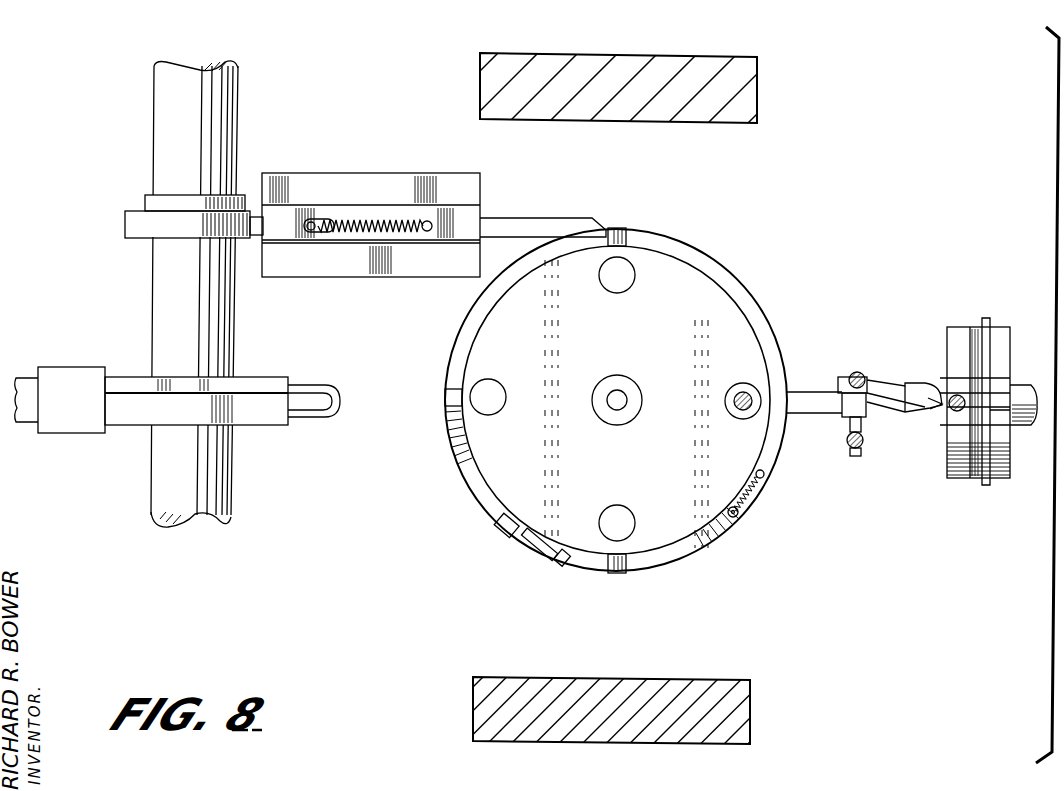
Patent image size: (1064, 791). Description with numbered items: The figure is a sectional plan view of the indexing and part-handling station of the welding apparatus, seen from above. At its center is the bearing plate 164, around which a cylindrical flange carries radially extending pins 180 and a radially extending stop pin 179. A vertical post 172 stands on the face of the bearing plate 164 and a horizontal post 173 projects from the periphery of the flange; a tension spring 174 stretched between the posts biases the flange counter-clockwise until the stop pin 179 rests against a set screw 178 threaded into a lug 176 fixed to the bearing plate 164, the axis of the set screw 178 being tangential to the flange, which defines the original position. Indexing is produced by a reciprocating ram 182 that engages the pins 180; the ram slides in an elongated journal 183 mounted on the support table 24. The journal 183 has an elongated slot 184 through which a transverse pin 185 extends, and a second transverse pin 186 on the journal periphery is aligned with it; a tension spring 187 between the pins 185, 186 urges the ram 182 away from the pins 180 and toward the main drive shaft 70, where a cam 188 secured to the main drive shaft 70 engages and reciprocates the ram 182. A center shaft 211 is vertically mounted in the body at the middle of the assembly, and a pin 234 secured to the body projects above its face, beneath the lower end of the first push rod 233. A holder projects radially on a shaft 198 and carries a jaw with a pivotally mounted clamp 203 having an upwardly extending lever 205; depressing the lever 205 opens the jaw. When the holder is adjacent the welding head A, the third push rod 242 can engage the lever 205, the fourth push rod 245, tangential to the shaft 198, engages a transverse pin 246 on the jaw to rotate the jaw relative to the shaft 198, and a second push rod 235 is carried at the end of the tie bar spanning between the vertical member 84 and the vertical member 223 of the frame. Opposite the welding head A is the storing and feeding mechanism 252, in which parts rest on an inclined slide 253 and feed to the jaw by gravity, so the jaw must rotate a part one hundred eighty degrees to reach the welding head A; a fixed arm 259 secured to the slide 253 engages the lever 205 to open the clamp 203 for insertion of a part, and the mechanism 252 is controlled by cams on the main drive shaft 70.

The main drive shaft 70 is at (232, 500).
The cam 188 is at (125, 215).
The elongated journal 183 is at (287, 205).
The elongated slot 184 is at (328, 222).
The transverse pin 185 is at (318, 235).
The second transverse pin 186 is at (426, 232).
The tension spring 187 is at (390, 218).
The reciprocating ram 182 is at (573, 218).
The bearing plate 164 is at (690, 548).
The pins 180 is at (628, 238).
The pin 234 is at (635, 272).
The center shaft 211 is at (619, 392).
The first push rod 233 is at (748, 393).
The stop pin 179 is at (498, 523).
The lug 176 is at (525, 543).
The set screw 178 is at (560, 563).
The vertical post 172 is at (773, 478).
The horizontal post 173 is at (740, 518).
The tension spring 174 is at (752, 500).
The shaft 198 is at (801, 392).
The lever 205 is at (842, 377).
The third push rod 242 is at (859, 373).
The fourth push rod 245 is at (848, 438).
The transverse pin 246 is at (853, 456).
The clamp 203 is at (906, 358).
The welding head A is at (950, 327).
The second push rod 235 is at (955, 412).
The vertical member 223 is at (737, 55).
The support table 24 is at (830, 158).
The vertical member 84 is at (750, 692).
The storing and feeding mechanism 252 is at (92, 338).
The slide 253 is at (255, 395).
The fixed arm 259 is at (322, 420).